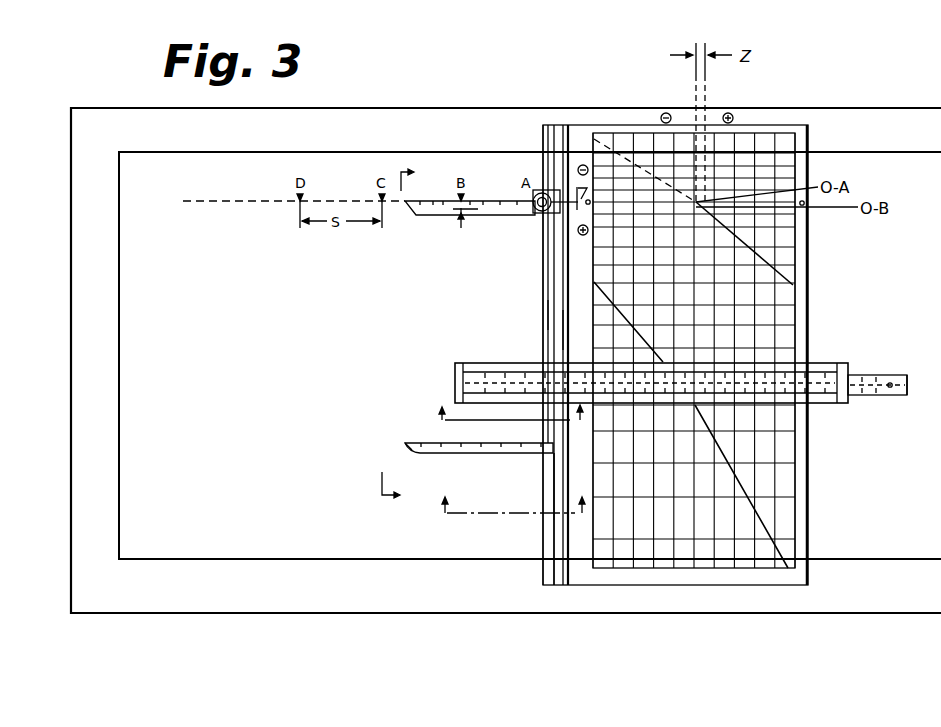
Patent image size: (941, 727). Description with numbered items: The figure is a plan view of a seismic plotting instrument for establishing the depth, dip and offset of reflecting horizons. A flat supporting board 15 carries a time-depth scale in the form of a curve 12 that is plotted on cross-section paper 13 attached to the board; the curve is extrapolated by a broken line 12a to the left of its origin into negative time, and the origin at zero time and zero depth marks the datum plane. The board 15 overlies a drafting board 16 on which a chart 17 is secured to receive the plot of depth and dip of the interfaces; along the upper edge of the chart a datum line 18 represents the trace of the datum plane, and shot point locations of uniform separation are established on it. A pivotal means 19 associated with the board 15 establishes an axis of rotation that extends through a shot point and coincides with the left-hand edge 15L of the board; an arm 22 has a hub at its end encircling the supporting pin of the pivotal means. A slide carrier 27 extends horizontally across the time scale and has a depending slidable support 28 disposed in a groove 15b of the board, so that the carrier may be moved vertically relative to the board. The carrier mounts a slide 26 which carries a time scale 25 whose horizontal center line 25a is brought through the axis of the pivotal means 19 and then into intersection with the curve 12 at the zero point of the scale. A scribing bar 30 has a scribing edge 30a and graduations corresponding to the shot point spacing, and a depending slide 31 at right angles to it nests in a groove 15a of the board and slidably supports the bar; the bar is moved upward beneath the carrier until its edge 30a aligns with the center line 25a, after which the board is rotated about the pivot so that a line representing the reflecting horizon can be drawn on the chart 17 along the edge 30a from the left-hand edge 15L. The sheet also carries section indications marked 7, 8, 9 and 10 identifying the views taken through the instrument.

The section line 7- 7 is at (520, 221).
The section line 8- 8 is at (506, 423).
The section line 9- 9 is at (509, 518).
The section line 10- 10 is at (411, 336).
The time-depth curve 12 is at (790, 250).
The broken line extrapolation of curve 12a is at (615, 153).
The cross-section paper 13 is at (795, 341).
The supporting board 15 is at (800, 309).
The groove 15a is at (547, 537).
The groove 15b is at (567, 329).
The left-hand edge 15L is at (547, 314).
The drafting board 16 is at (71, 385).
The chart 17 is at (357, 552).
The datum line 18 is at (189, 201).
The pivotal means 19 is at (540, 206).
The arm 22 is at (432, 211).
The time scale 25 is at (877, 377).
The horizontal center line 25a is at (890, 392).
The slide 26 is at (907, 386).
The slide carrier 27 is at (480, 370).
The depending slidable support 28 is at (567, 350).
The scribing bar 30 is at (496, 449).
The scribing edge 30a is at (425, 443).
The depending slide 31 is at (548, 473).